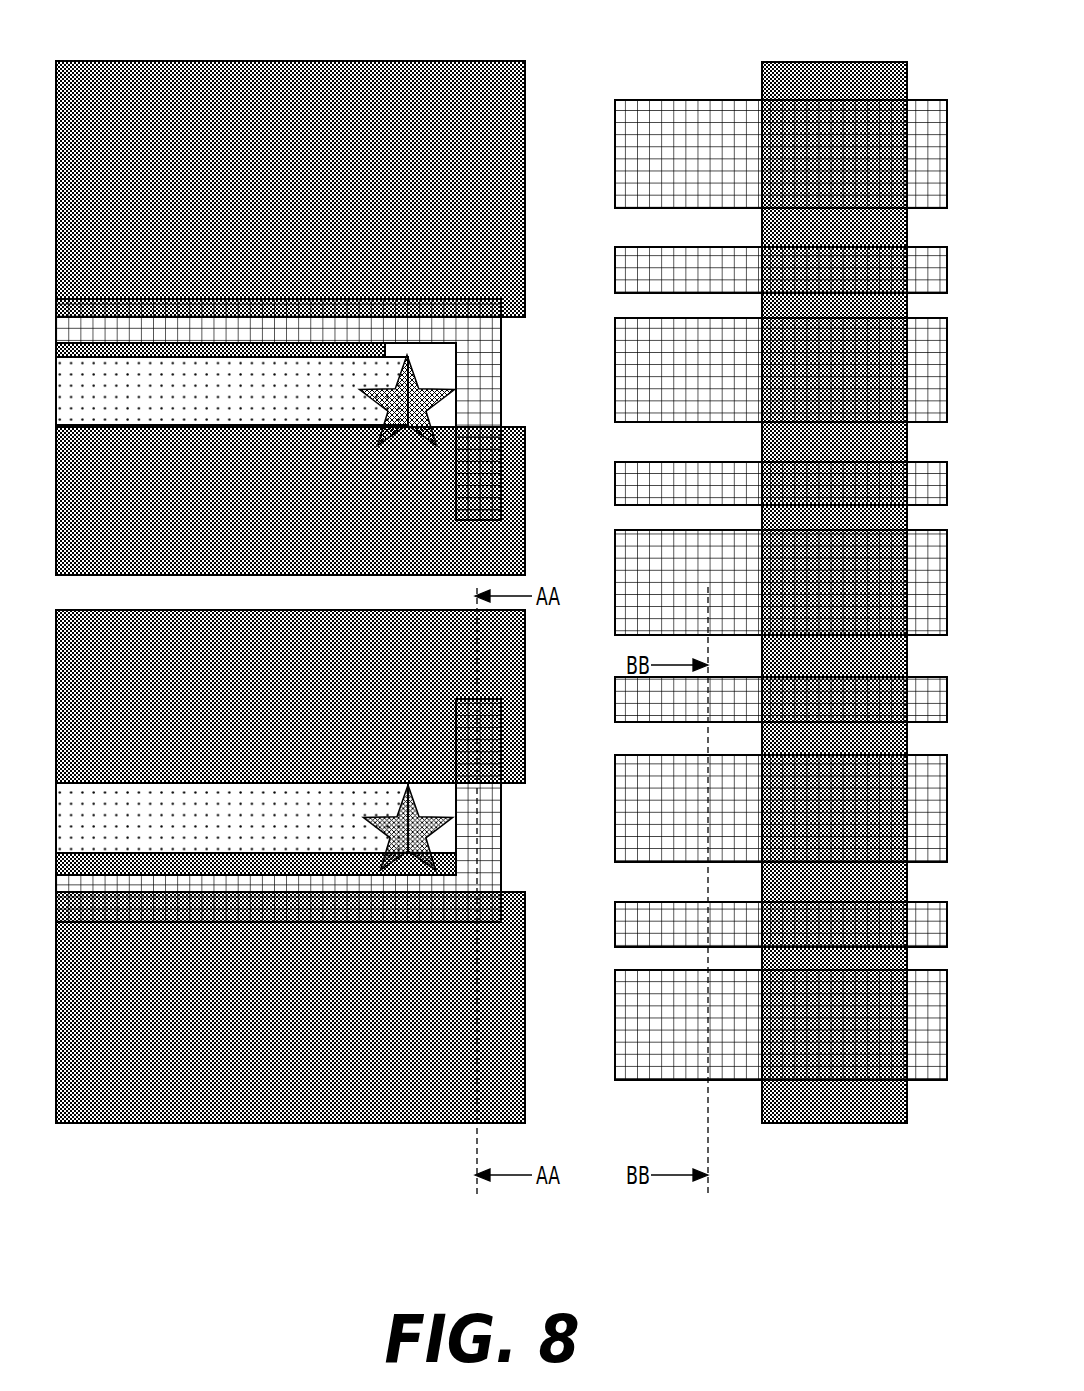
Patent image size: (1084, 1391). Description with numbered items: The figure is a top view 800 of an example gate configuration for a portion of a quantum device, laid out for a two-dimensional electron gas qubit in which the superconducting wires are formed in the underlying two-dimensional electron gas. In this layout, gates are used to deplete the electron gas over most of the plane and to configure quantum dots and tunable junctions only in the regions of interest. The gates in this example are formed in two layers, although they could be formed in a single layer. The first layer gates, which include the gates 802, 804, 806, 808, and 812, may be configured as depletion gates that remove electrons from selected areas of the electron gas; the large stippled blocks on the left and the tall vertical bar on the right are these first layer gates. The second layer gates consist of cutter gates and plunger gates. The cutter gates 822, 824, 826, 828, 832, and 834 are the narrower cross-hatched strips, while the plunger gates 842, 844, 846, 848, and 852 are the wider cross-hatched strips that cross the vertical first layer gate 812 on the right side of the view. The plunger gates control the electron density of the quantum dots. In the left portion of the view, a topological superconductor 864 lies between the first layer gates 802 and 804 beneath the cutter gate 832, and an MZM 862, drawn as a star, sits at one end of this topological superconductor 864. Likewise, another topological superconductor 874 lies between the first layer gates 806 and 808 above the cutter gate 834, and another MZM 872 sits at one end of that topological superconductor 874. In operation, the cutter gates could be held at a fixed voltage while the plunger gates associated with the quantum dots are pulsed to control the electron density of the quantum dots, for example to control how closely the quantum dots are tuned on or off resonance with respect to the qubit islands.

The top view 800 is at (468, 1287).
The first layer gate 802 is at (273, 205).
The first layer gate 804 is at (273, 514).
The first layer gate 806 is at (266, 716).
The first layer gate 808 is at (259, 1025).
The first layer gate 812 is at (838, 62).
The cutter gate 822 is at (816, 283).
The cutter gate 824 is at (816, 498).
The cutter gate 826 is at (816, 714).
The cutter gate 828 is at (816, 938).
The cutter gate 832 is at (267, 335).
The cutter gate 834 is at (260, 911).
The plunger gate 842 is at (816, 170).
The plunger gate 844 is at (816, 387).
The plunger gate 846 is at (816, 601).
The plunger gate 848 is at (816, 824).
The plunger gate 852 is at (816, 1039).
The MZM 862 is at (447, 398).
The topological superconductor 864 is at (196, 405).
The MZM 872 is at (433, 850).
The topological superconductor 874 is at (199, 836).